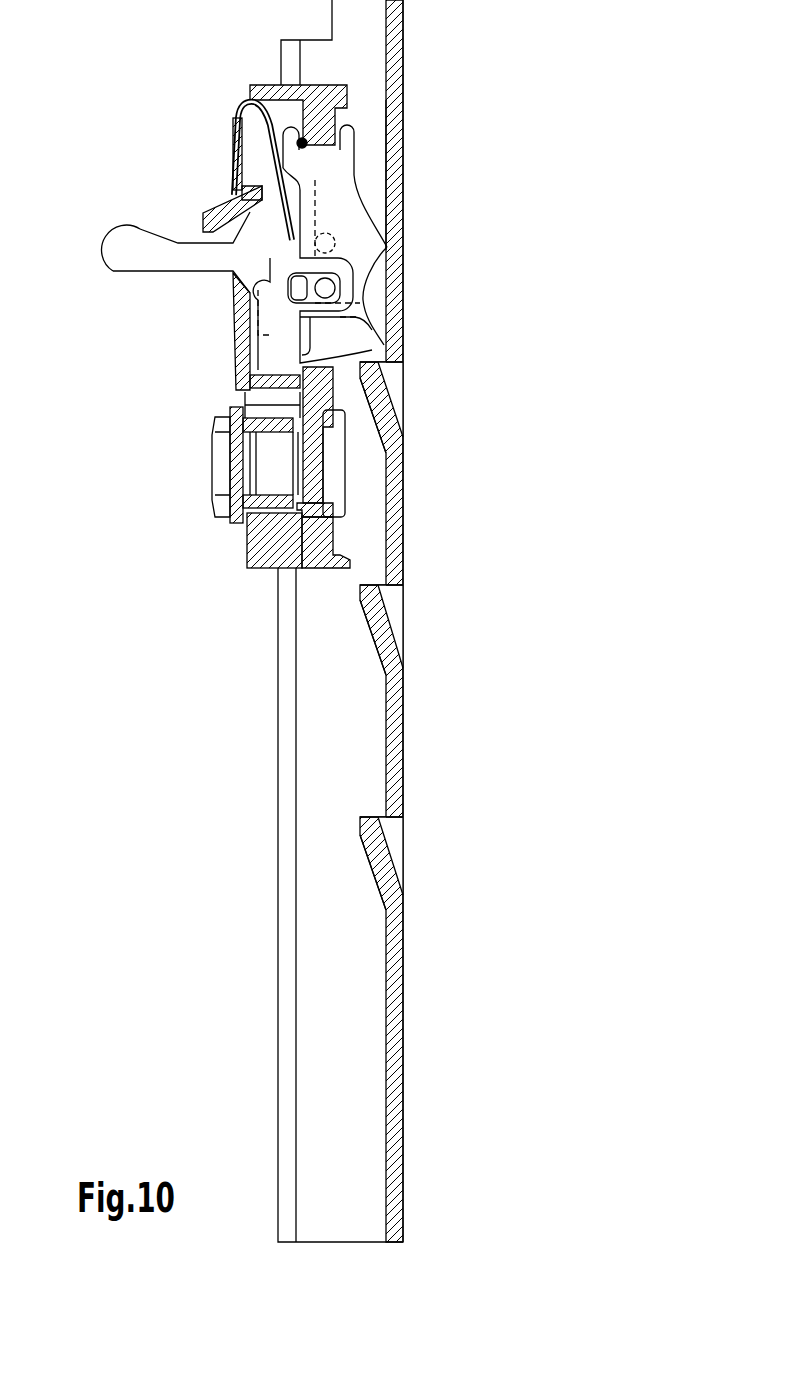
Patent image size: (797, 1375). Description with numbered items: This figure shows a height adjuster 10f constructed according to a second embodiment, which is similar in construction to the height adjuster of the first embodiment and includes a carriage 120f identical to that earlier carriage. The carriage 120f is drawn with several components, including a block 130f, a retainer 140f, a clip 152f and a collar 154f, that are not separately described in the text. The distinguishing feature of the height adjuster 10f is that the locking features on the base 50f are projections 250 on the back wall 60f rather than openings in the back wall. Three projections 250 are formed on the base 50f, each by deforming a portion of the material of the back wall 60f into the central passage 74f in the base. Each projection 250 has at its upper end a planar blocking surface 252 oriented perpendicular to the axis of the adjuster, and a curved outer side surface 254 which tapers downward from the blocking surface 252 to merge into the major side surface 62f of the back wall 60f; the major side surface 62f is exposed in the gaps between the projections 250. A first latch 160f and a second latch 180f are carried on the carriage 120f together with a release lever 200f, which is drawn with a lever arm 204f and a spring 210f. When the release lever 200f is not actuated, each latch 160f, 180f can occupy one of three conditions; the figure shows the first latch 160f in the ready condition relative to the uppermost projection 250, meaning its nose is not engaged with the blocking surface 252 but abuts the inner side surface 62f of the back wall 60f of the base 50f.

The height adjuster 10f is at (112, 678).
The base 50f is at (272, 972).
The back wall 60f is at (403, 1113).
The major side surface 62f is at (381, 170).
The central passage 74f is at (343, 990).
The carriage 120f is at (294, 484).
The bushing block 130f is at (238, 556).
The retainer 140f is at (345, 532).
The clip 152f is at (345, 470).
The collar 154f is at (222, 452).
The first latch 160f is at (392, 212).
The second latch 180f is at (388, 323).
The release lever 200f is at (174, 225).
The lever 204f is at (132, 245).
The spring 210f is at (240, 100).
The projections 250 is at (378, 398).
The blocking surface 252 is at (388, 348).
The curved outer side surface 254 is at (387, 432).